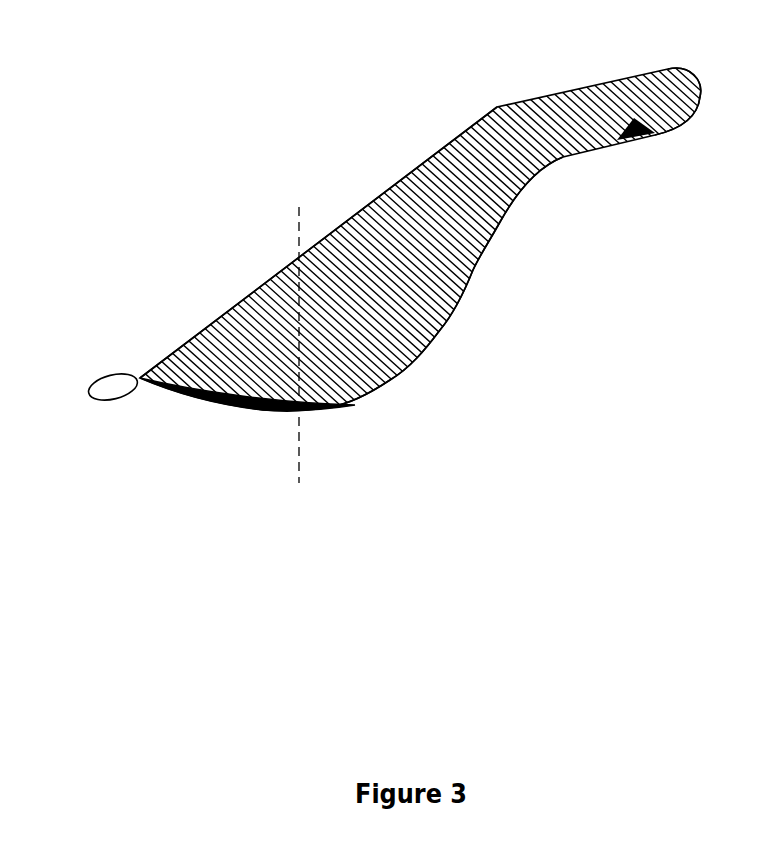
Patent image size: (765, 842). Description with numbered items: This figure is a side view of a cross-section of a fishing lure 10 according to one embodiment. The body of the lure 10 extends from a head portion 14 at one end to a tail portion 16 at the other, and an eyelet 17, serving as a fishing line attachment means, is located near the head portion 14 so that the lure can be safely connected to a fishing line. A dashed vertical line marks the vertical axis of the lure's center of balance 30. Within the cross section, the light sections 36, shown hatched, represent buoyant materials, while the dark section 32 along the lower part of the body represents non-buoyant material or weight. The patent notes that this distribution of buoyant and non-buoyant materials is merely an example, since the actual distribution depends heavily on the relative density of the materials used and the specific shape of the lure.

The lure 10 is at (417, 133).
The head portion 14 is at (197, 366).
The tail portion 16 is at (600, 85).
The eyelet 17 is at (95, 372).
The vertical axis of the lure's center of balance 30 is at (296, 234).
The dark section 32 is at (252, 410).
The light sections 36 is at (468, 228).